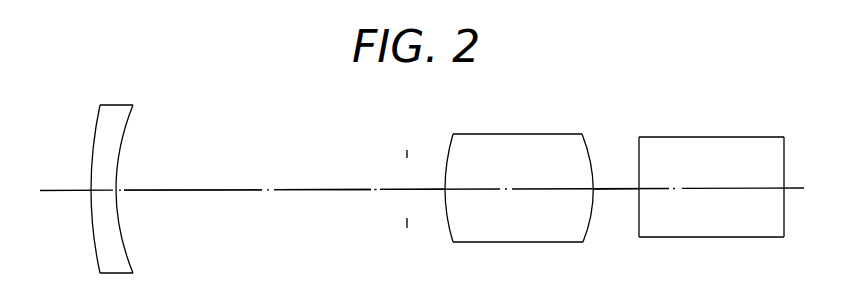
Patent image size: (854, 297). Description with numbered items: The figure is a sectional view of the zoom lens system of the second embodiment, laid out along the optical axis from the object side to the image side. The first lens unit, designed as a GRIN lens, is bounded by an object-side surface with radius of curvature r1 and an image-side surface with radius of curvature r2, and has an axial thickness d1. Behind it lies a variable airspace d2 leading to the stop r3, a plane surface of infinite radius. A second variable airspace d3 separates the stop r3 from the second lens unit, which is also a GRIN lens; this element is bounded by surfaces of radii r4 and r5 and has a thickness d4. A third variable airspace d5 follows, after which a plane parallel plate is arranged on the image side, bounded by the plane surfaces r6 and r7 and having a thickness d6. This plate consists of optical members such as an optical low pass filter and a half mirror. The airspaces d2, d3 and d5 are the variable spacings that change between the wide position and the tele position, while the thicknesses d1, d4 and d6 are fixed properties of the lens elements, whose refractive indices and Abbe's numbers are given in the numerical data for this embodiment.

The radius of curvature of first surface r1 is at (90, 227).
The radius of curvature of second surface r2 is at (123, 238).
The stop r3 is at (403, 225).
The radius of curvature of fourth surface r4 is at (450, 227).
The radius of curvature of fifth surface r5 is at (588, 225).
The radius of curvature of sixth surface r6 is at (639, 225).
The radius of curvature of seventh surface r7 is at (784, 225).
The thickness of first lens element d1 is at (100, 188).
The airspace between first lens element and stop d2 is at (240, 188).
The airspace between stop and second lens element d3 is at (434, 187).
The thickness of second lens element d4 is at (523, 187).
The airspace between second lens element and plane parallel plate d5 is at (613, 187).
The thickness of plane parallel plate d6 is at (717, 186).